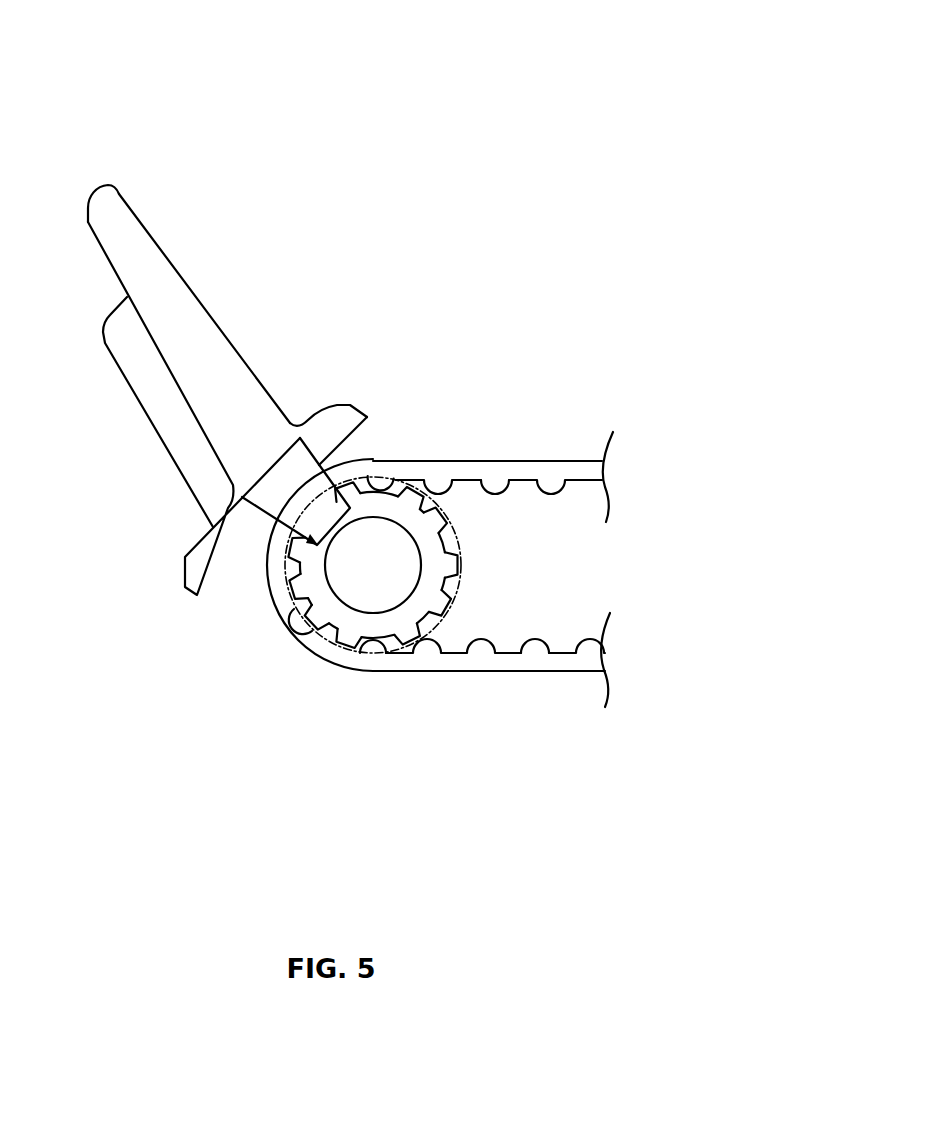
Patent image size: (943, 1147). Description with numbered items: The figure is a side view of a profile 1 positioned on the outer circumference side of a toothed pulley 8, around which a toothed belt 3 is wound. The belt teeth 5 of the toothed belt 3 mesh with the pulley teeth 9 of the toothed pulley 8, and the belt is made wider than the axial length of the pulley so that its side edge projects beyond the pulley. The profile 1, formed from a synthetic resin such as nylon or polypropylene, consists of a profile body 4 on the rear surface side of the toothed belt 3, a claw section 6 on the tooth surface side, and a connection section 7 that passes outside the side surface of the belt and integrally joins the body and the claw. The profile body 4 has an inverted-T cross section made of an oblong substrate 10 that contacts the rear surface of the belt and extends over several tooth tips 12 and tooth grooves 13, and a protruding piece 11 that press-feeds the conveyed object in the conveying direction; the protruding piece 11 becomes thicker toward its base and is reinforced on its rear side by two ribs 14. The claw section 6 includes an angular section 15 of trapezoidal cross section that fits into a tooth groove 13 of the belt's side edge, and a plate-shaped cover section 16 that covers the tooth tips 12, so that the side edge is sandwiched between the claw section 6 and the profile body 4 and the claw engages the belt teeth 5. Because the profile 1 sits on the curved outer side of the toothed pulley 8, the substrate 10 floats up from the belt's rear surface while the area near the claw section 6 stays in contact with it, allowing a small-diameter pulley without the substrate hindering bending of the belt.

The profile 1 is at (222, 119).
The toothed belt 3 is at (527, 463).
The profile body 4 is at (310, 372).
The belt teeth 5 is at (563, 518).
The claw section 6 is at (283, 605).
The connection section 7 is at (265, 497).
The toothed pulley 8 is at (352, 617).
The pulley teeth 9 is at (460, 602).
The substrate 10 is at (343, 423).
The protruding piece 11 is at (132, 243).
The tooth tips 12 is at (495, 494).
The tooth grooves 13 is at (508, 645).
The ribs 14 is at (160, 410).
The angular section 15 is at (350, 508).
The cover section 16 is at (340, 510).